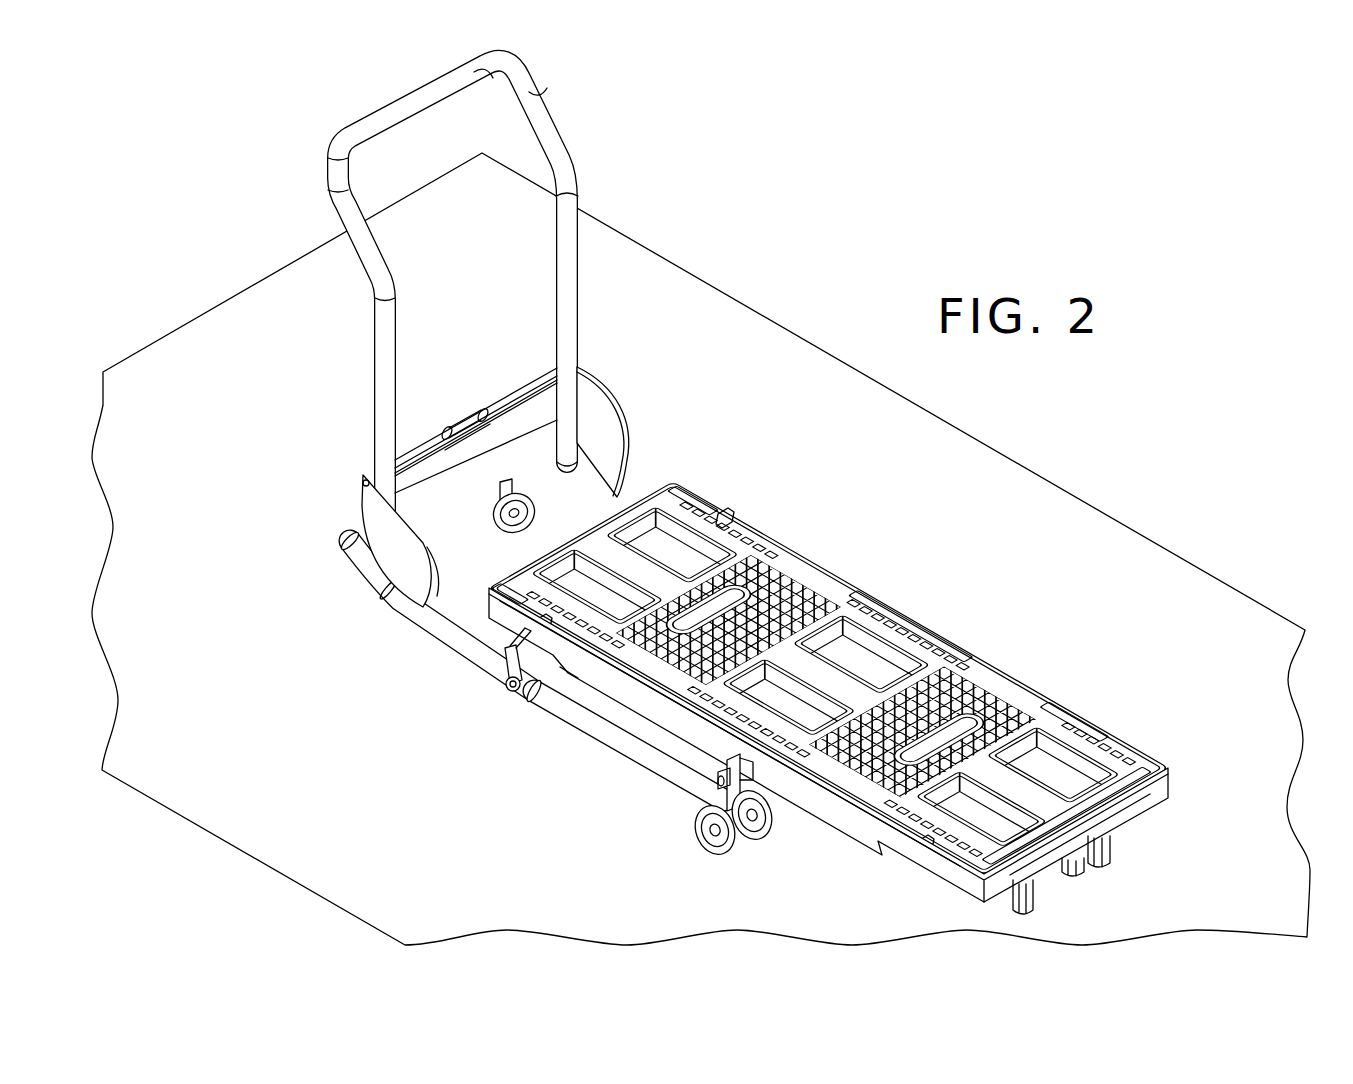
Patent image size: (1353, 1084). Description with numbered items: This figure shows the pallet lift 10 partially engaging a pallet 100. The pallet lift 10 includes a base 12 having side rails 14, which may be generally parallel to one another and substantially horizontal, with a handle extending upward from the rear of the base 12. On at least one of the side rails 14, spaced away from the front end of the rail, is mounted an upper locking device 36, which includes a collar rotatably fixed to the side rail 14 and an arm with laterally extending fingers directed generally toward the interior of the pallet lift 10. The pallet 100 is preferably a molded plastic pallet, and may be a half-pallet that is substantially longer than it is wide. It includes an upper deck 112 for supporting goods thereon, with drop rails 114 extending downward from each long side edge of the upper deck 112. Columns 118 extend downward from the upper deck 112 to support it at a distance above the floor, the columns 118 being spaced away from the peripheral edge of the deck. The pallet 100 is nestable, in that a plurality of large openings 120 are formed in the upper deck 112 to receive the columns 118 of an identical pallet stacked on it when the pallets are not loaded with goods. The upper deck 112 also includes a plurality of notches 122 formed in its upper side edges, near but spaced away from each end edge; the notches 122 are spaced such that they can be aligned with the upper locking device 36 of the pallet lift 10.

The pallet lift 10 is at (534, 460).
The base 12 is at (420, 633).
The side rails 14 is at (613, 757).
The upper locking device 36 is at (510, 658).
The pallet 100 is at (845, 690).
The upper deck 112 is at (825, 676).
The drop rails 114 is at (847, 840).
The columns 118 is at (1103, 850).
The pocket 120 is at (1082, 773).
The notches 122 is at (722, 520).